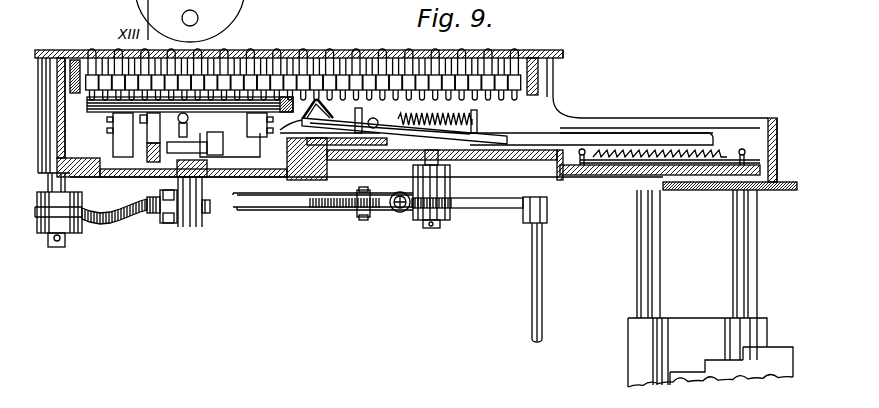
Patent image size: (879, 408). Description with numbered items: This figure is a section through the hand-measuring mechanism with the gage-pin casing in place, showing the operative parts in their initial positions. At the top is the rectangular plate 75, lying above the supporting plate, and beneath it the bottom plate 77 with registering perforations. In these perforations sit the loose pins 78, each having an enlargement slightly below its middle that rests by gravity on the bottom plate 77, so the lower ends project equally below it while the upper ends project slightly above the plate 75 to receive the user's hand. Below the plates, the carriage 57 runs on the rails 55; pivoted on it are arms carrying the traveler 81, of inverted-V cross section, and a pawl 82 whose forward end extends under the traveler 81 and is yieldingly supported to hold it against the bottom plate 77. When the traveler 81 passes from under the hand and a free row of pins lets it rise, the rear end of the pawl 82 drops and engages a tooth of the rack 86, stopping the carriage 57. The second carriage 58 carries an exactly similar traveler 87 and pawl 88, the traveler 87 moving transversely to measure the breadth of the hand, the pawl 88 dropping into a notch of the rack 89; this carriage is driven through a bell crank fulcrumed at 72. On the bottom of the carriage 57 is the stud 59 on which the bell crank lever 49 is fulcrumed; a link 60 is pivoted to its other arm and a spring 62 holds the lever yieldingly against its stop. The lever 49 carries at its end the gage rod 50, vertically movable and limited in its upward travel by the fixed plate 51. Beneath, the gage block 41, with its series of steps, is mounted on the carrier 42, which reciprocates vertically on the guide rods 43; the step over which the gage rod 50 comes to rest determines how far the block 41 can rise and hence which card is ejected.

The pins 78 is at (292, 51).
The rectangular plate 75 is at (543, 57).
The bottom plate 77 is at (522, 99).
The rails 55 is at (566, 138).
The rack 86 is at (715, 146).
The fixed plate 51 is at (773, 191).
The guide rods 43 is at (737, 245).
The carrier 42 is at (710, 352).
The gage block 41 is at (768, 362).
The gage rod 50 is at (543, 258).
The bell crank lever 49 is at (490, 208).
The stud 59 is at (428, 228).
The link 60 is at (267, 209).
The spring 62 is at (395, 214).
The carriage 57 is at (350, 143).
The pawl 82 is at (487, 137).
The traveler 81 is at (300, 118).
The traveler 87 is at (97, 112).
The pawl 88 is at (145, 131).
The carriage 58 is at (217, 178).
The rack 89 is at (152, 166).
The fulcrum 72 is at (66, 243).